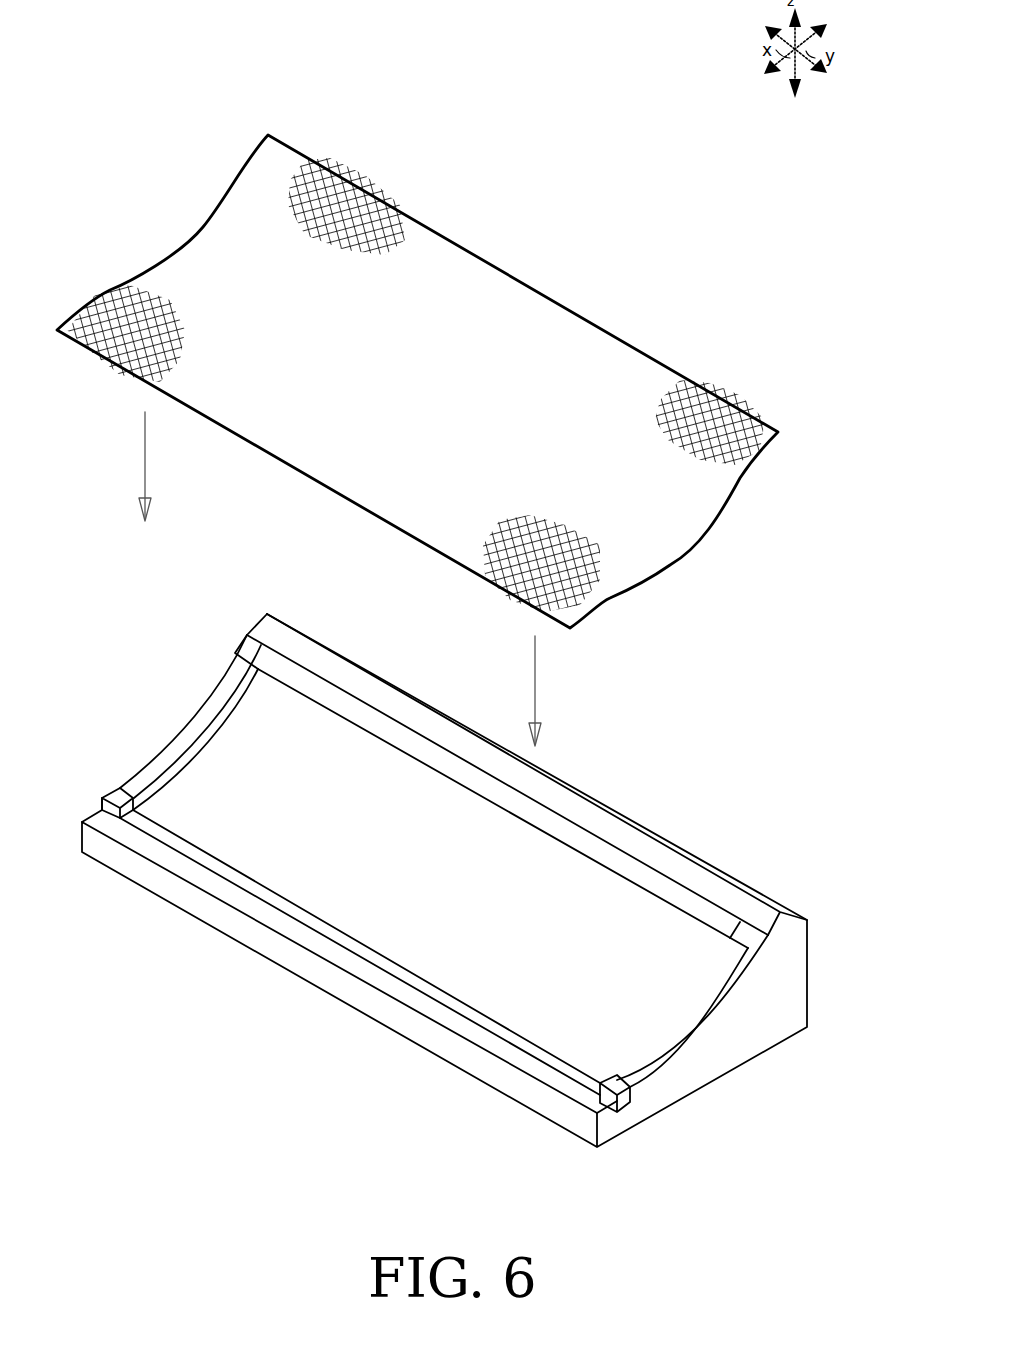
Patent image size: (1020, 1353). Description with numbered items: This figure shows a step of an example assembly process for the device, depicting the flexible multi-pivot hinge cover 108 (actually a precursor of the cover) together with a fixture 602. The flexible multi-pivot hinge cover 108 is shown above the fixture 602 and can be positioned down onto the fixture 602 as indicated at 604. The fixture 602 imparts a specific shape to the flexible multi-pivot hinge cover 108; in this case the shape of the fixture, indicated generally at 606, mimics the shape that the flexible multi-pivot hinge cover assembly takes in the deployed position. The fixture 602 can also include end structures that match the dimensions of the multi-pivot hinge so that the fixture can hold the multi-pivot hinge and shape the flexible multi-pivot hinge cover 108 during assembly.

The flexible multi-pivot hinge cover 108 is at (203, 228).
The fixture 602 is at (420, 897).
The positioning indication 604 is at (147, 463).
The shape of the fixture 606 is at (267, 848).